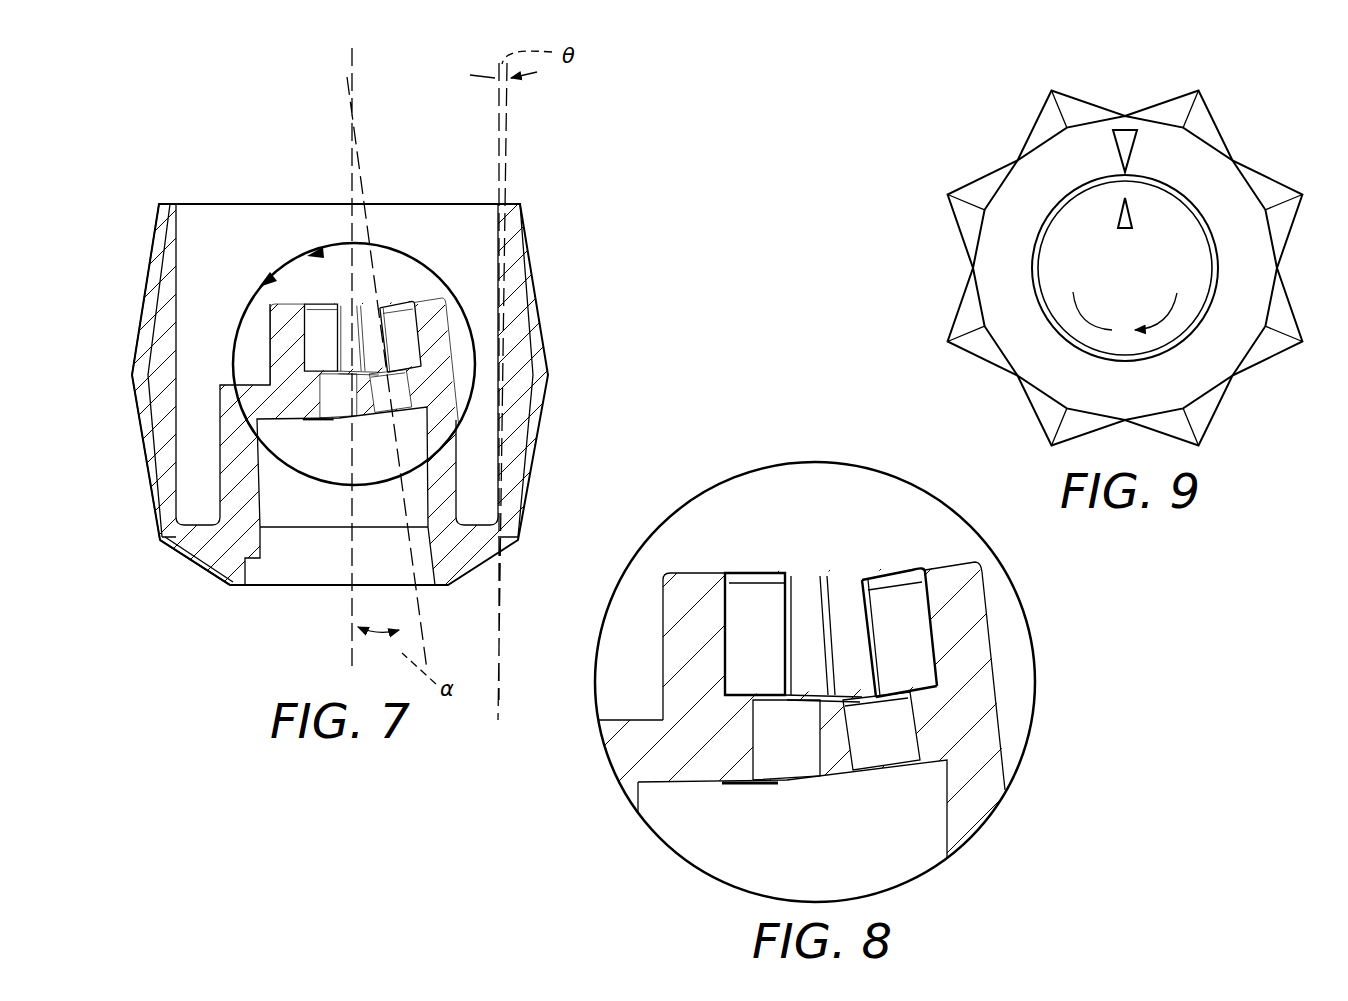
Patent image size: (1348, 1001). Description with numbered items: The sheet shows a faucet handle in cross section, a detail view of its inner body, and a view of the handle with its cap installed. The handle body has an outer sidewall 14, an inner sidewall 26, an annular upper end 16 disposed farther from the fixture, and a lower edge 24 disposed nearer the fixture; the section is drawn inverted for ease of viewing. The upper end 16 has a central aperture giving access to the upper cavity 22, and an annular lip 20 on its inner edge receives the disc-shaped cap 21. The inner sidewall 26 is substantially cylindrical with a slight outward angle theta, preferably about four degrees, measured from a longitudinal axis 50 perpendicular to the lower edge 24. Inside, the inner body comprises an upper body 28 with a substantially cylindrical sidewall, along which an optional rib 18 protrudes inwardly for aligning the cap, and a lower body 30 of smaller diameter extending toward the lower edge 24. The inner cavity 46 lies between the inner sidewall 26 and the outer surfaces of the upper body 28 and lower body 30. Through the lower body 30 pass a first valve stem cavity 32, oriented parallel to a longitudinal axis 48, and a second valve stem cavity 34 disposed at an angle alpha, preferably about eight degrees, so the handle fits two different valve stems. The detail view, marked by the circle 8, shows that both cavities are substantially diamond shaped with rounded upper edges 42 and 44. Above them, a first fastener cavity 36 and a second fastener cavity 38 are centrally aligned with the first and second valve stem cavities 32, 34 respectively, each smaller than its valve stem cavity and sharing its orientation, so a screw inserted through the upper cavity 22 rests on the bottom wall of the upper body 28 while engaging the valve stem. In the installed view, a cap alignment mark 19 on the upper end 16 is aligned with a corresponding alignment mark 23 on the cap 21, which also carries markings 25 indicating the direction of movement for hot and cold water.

In FIG. 7, the outer sidewall 14 is at (143, 327).
In FIG. 7, the upper end 16 is at (163, 548).
In FIG. 7, the rib 18 is at (242, 542).
In FIG. 7, the annular lip 20 is at (272, 587).
In FIG. 7, the upper cavity 22 is at (287, 483).
In FIG. 8, the upper cavity 22 is at (786, 842).
In FIG. 7, the lower edge 24 is at (320, 204).
In FIG. 7, the inner sidewall 26 is at (173, 250).
In FIG. 7, the upper body 28 is at (230, 427).
In FIG. 8, the upper body 28 is at (977, 800).
In FIG. 8, the lower body 30 is at (677, 585).
In FIG. 8, the first valve stem cavity 32 is at (743, 645).
In FIG. 8, the second valve stem cavity 34 is at (907, 648).
In FIG. 8, the first fastener cavity 36 is at (772, 745).
In FIG. 8, the second fastener cavity 38 is at (890, 740).
In FIG. 8, the rounded upper edge 42 is at (757, 578).
In FIG. 8, the rounded upper edge 44 is at (902, 578).
In FIG. 7, the inner cavity 46 is at (250, 226).
In FIG. 7, the longitudinal axis 48 is at (350, 595).
In FIG. 7, the longitudinal axis 50 is at (497, 125).
In FIG. 7, the detail view circle 8 is at (354, 364).
In FIG. 9, the cap alignment mark 19 is at (1123, 128).
In FIG. 9, the cap 21 is at (1173, 213).
In FIG. 9, the alignment mark 23 is at (1117, 222).
In FIG. 9, the markings 25 is at (1258, 378).